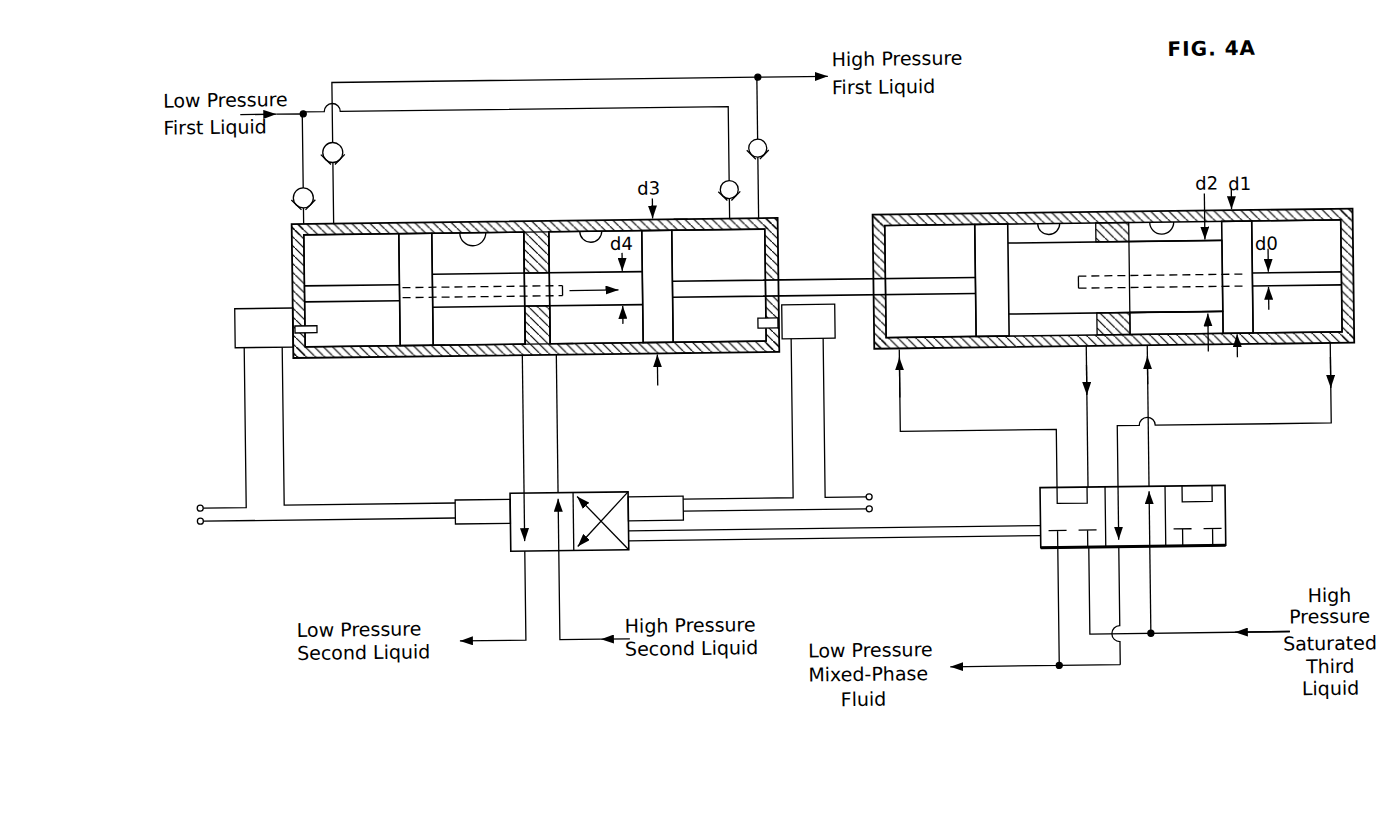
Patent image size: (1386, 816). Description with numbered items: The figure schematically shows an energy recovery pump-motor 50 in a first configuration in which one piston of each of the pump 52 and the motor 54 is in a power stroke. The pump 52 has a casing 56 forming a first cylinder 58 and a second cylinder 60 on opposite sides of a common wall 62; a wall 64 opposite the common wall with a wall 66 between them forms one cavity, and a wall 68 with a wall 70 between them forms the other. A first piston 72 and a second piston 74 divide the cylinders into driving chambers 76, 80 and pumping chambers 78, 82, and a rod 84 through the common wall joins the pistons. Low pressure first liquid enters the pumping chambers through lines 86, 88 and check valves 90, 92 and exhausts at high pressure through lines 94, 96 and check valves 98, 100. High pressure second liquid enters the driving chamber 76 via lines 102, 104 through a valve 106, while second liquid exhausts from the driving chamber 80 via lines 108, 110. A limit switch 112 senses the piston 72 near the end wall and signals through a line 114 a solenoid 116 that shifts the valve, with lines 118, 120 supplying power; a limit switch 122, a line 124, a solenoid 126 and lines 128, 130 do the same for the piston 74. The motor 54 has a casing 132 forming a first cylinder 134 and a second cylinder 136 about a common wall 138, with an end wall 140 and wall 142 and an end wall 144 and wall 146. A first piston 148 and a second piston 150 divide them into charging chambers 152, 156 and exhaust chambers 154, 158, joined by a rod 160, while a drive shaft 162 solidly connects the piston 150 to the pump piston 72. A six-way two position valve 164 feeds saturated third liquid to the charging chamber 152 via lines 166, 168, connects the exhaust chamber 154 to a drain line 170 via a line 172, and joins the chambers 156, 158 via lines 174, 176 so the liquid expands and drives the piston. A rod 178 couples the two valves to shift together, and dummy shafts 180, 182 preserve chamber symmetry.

The energy recovery pump-motor 50 is at (979, 113).
The pump 52 is at (490, 140).
The motor 54 is at (1244, 159).
The casing 56 is at (352, 217).
The first cylinder 58 is at (607, 221).
The second cylinder 60 is at (487, 219).
The common wall 62 is at (570, 220).
The wall 64 is at (783, 223).
The wall 66 is at (682, 221).
The wall 68 is at (294, 257).
The wall 70 is at (430, 219).
The first piston 72 is at (684, 335).
The second piston 74 is at (438, 317).
The driving chamber 76 is at (601, 332).
The pumping chamber 78 is at (726, 334).
The driving chamber 80 is at (488, 331).
The pumping chamber 82 is at (366, 330).
The rod 84 is at (566, 328).
The line 86 is at (616, 107).
The line 88 is at (306, 158).
The check valve 90 is at (728, 182).
The check valve 92 is at (298, 188).
The line 94 is at (763, 109).
The line 96 is at (464, 80).
The check valve 98 is at (773, 150).
The check valve 100 is at (346, 151).
The line 102 is at (557, 588).
The line 104 is at (557, 447).
The valve 106 is at (624, 550).
The line 108 is at (523, 408).
The line 110 is at (521, 583).
The limit switch 112 is at (841, 342).
The line 114 is at (792, 416).
The solenoid 116 is at (649, 496).
The line 118 is at (827, 444).
The line 120 is at (779, 516).
The limit switch 122 is at (236, 314).
The line 124 is at (285, 457).
The solenoid 126 is at (489, 494).
The line 128 is at (246, 419).
The line 130 is at (334, 516).
The casing 132 is at (899, 217).
The first cylinder 134 is at (1159, 231).
The second cylinder 136 is at (1067, 229).
The common wall 138 is at (1142, 228).
The end wall 140 is at (1355, 233).
The wall 142 is at (1270, 216).
The end wall 144 is at (875, 249).
The wall 146 is at (969, 219).
The first piston 148 is at (1254, 322).
The second piston 150 is at (976, 316).
The charging chamber 152 is at (1186, 329).
The exhaust chamber 154 is at (1338, 334).
The charging chamber 156 is at (1061, 327).
The exhaust chamber 158 is at (949, 335).
The rod 160 is at (1148, 321).
The drive shaft 162 is at (815, 268).
The six-way two position valve 164 is at (1224, 553).
The line 166 is at (1148, 458).
The line 168 is at (1150, 594).
The drain line 170 is at (1035, 629).
The line 172 is at (1262, 432).
The line 174 is at (1087, 410).
The line 176 is at (1000, 434).
The rod 178 is at (925, 538).
The dummy shaft 180 is at (329, 295).
The dummy shaft 182 is at (1302, 280).